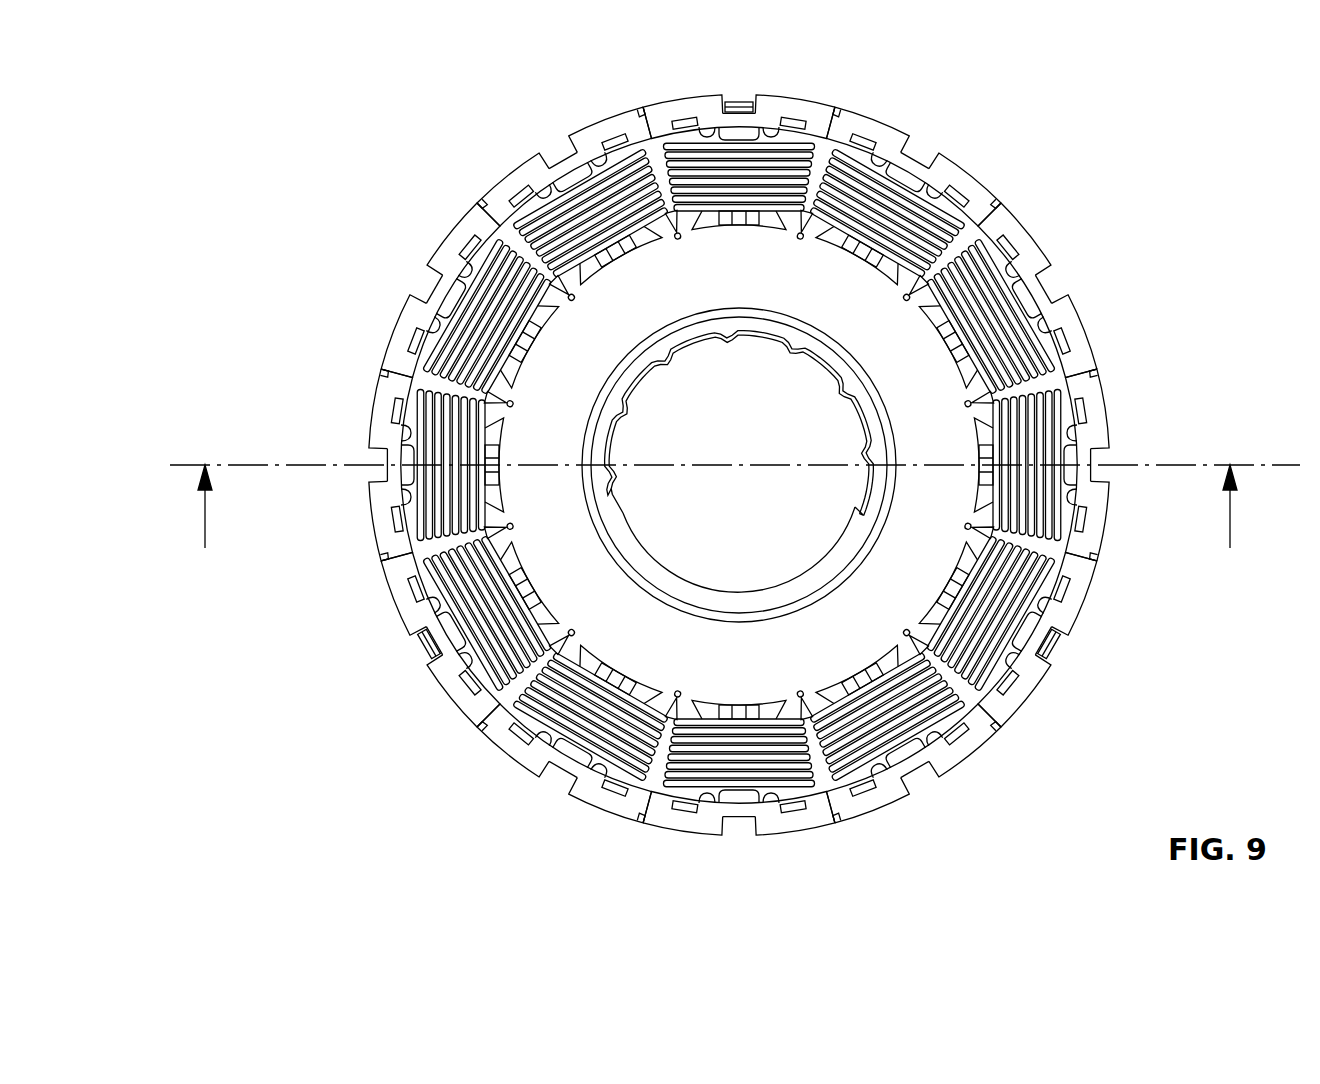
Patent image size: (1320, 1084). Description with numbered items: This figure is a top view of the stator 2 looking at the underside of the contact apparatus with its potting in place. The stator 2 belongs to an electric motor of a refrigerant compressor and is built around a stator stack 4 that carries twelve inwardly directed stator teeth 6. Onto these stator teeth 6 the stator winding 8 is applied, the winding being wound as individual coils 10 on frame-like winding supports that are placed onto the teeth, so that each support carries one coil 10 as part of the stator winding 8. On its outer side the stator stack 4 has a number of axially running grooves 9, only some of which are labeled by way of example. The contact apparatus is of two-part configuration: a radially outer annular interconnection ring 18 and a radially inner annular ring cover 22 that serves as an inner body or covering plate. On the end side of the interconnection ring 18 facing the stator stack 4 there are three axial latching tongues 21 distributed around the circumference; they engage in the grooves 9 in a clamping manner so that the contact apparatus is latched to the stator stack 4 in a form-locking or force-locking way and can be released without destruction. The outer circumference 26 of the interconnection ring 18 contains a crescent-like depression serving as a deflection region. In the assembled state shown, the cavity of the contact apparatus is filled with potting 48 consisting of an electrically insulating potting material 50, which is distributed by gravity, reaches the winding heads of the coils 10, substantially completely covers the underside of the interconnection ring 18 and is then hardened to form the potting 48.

The stator 2 is at (321, 211).
The stator stack 4 is at (756, 423).
The stator teeth 6 is at (618, 240).
The stator winding 8 is at (733, 525).
The grooves 9 is at (728, 98).
The coils 10 is at (440, 420).
The interconnection ring 18 is at (820, 565).
The latching tongues 21 is at (753, 100).
The ring cover 22 is at (813, 358).
The outer circumference 26 is at (428, 277).
The potting 48 is at (848, 280).
The potting material 50 is at (741, 461).